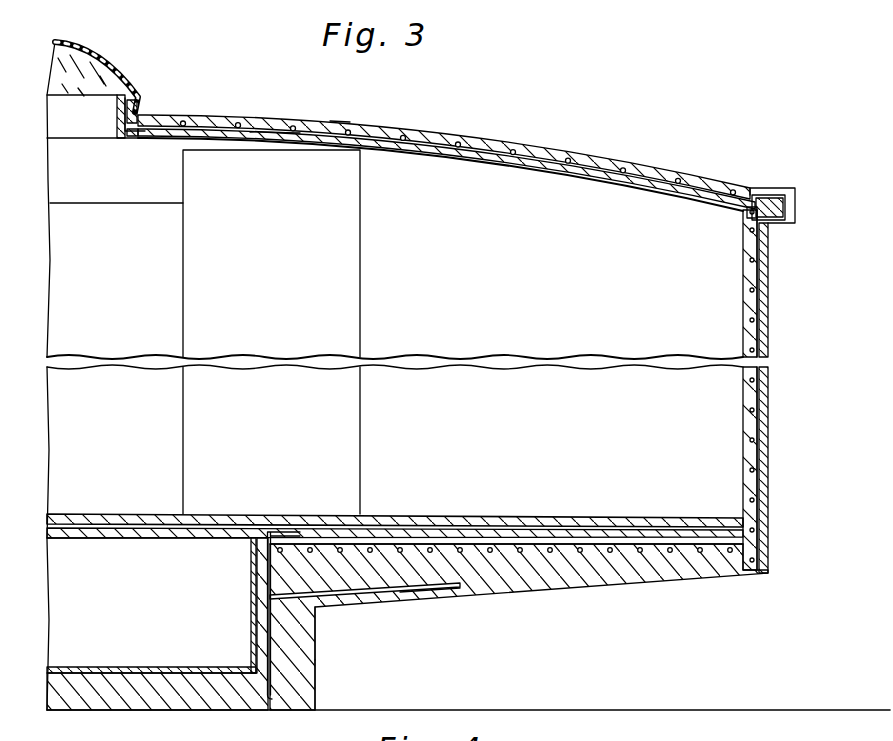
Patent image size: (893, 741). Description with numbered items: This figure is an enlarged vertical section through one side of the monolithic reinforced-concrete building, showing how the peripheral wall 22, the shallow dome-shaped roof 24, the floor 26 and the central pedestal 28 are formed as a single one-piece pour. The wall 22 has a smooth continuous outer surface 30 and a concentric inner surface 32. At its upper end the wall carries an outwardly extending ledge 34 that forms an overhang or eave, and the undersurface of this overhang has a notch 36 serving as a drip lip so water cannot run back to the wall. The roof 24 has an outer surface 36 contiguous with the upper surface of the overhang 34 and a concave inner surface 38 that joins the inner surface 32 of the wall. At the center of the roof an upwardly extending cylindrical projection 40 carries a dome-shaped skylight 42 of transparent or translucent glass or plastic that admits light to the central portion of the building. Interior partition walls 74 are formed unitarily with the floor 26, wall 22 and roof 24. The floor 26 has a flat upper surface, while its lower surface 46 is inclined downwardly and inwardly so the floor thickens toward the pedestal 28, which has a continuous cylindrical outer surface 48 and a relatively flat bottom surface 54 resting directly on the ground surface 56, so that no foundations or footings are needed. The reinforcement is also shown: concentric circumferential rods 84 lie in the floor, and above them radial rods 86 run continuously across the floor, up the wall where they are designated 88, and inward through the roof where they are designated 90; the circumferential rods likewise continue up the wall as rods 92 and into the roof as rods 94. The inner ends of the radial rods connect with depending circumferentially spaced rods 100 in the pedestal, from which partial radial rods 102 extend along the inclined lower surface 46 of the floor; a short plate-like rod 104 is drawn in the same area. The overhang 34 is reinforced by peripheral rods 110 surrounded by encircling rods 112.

The peripheral wall 22 is at (749, 391).
The roof 24 is at (441, 153).
The floor 26 is at (407, 596).
The central pedestal 28 is at (318, 694).
The outer surface 30 is at (768, 324).
The inner surface 32 is at (743, 301).
The ledge 34 is at (780, 188).
The outer surface 36 is at (520, 153).
The inner surface 38 is at (487, 162).
The cylindrical projection 40 is at (140, 107).
The dome-shaped skylight 42 is at (102, 48).
The lower surface 46 is at (537, 593).
The outer surface 48 is at (316, 662).
The bottom surface 54 is at (243, 712).
The ground surface 56 is at (492, 712).
The interior partition walls 74 is at (556, 277).
The concentric reinforcing rods 84 is at (723, 555).
The radial reinforcing rods 86 is at (700, 543).
The radial reinforcing rods in wall 88 is at (770, 447).
The radial reinforcing rods in roof 90 is at (273, 134).
The circumferential reinforcing rods in wall 92 is at (743, 456).
The circumferential reinforcing rods in roof 94 is at (342, 130).
The depending reinforcing rods 100 is at (278, 696).
The partial radial reinforcing rods 102 is at (453, 590).
The plate 104 is at (396, 598).
The peripheral reinforcing rods 110 is at (795, 203).
The encircling reinforcing rods 112 is at (762, 188).